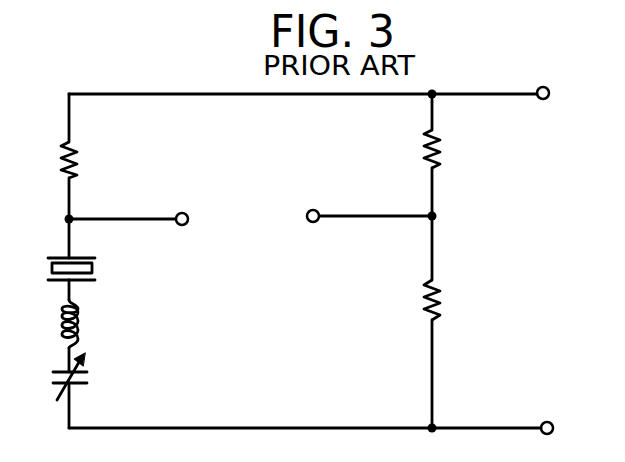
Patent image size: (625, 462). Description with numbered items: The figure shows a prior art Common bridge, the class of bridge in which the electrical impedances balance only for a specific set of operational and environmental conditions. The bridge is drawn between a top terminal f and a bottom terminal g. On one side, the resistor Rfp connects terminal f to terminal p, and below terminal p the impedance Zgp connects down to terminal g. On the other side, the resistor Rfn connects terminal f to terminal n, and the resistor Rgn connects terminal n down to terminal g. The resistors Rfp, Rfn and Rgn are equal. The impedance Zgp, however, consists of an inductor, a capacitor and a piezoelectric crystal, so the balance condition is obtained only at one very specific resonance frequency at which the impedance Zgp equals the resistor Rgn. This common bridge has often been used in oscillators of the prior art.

The resistor Rfp is at (99, 160).
The resistor Rfn is at (462, 149).
The resistor Rgn is at (463, 300).
The impedance Zgp is at (102, 250).
The terminal p is at (141, 216).
The terminal n is at (357, 214).
The terminal f is at (552, 92).
The terminal g is at (561, 426).